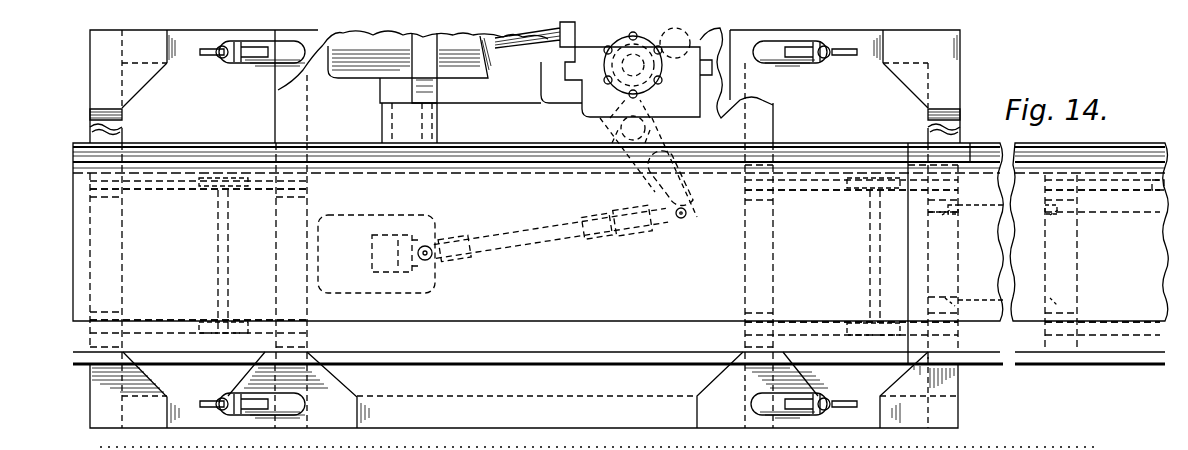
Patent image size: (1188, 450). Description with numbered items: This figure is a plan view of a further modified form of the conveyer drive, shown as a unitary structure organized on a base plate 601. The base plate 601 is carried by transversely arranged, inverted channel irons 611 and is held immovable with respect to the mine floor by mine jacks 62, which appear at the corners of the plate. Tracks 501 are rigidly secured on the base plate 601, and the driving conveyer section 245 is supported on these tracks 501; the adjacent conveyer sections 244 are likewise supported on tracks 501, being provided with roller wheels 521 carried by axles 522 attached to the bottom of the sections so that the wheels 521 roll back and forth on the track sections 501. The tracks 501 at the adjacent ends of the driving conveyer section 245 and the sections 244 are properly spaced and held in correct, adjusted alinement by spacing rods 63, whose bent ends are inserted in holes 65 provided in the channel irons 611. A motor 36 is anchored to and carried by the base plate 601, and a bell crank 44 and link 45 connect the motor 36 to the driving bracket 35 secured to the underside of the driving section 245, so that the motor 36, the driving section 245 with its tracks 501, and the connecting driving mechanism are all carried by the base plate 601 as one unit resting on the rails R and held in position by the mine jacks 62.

The driving conveyer section 245 is at (73, 287).
The conveyer section 244 is at (1100, 367).
The base plate 601 is at (960, 63).
The channel iron 611 is at (90, 125).
The mine jack 62 is at (266, 63).
The motor 36 is at (462, 72).
The bell crank 44 is at (706, 104).
The link 45 is at (524, 258).
The driving bracket 35 is at (380, 293).
The track 501 is at (165, 189).
The roller wheel 521 is at (236, 188).
The axle 522 is at (218, 248).
The spacing rod 63 is at (983, 210).
The hole 65 is at (999, 255).
The rail R is at (826, 441).